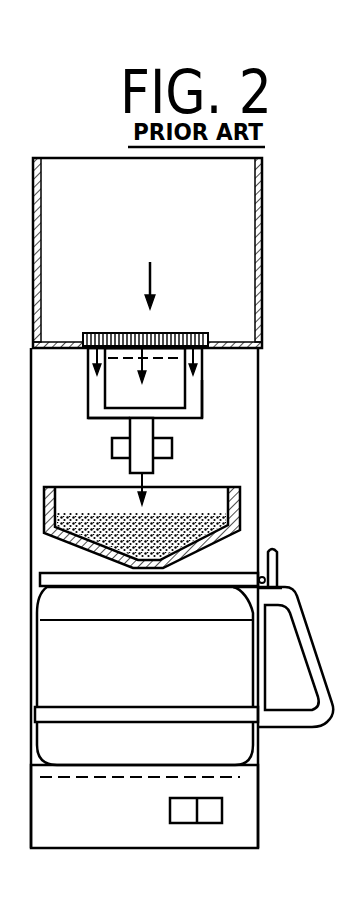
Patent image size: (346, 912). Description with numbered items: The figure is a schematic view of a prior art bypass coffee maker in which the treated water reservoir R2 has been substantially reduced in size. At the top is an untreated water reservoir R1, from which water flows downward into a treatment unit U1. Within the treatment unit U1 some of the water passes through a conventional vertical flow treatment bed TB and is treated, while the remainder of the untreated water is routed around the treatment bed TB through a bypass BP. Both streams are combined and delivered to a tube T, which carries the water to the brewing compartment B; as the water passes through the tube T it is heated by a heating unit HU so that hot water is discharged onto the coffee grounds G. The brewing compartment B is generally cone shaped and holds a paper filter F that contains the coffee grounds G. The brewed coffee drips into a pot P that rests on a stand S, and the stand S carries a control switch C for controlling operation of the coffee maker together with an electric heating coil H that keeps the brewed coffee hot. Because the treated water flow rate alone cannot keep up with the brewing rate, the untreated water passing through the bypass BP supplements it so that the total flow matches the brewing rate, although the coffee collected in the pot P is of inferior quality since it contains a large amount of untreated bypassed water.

The untreated water reservoir R1 is at (150, 242).
The bypass BP is at (93, 392).
The treatment bed TB is at (181, 403).
The treated water reservoir R2 is at (96, 416).
The treatment unit U1 is at (203, 405).
The heating unit HU is at (112, 445).
The tube T is at (155, 428).
The coffee grounds G is at (192, 517).
The paper filter F is at (247, 497).
The brewing compartment B is at (245, 513).
The pot P is at (158, 673).
The heating coil H is at (70, 778).
The control switch C is at (180, 798).
The stand S is at (120, 834).